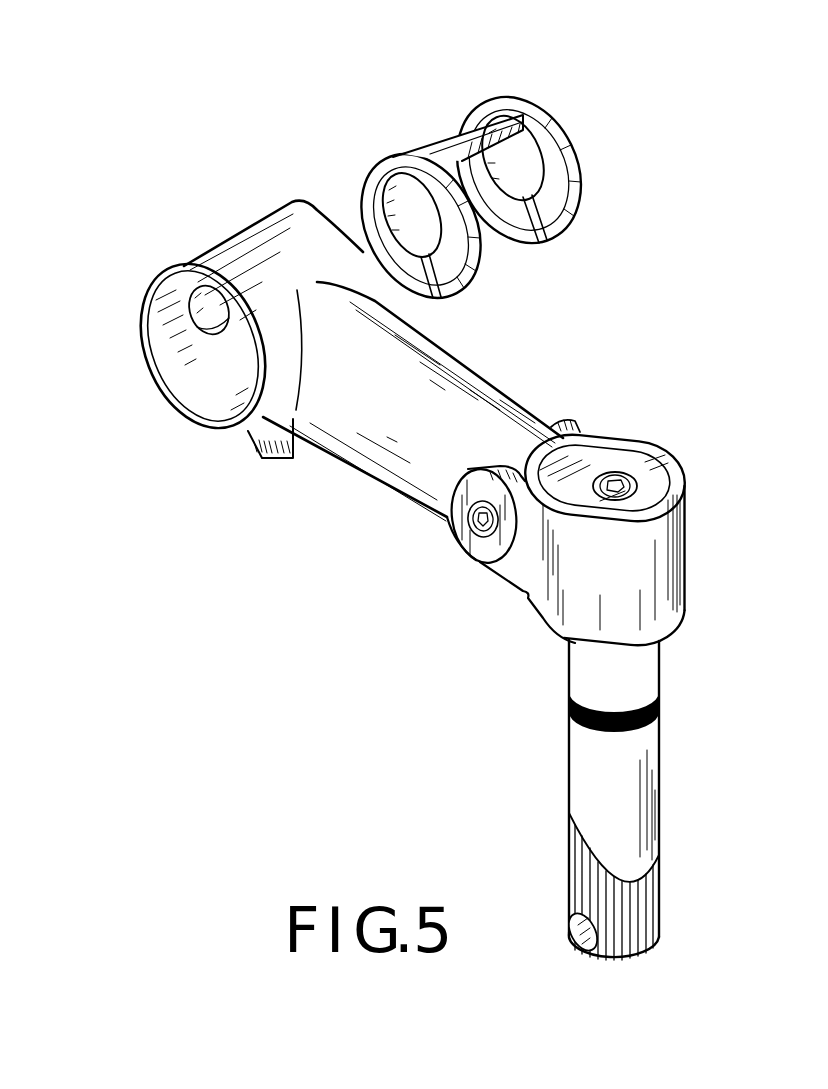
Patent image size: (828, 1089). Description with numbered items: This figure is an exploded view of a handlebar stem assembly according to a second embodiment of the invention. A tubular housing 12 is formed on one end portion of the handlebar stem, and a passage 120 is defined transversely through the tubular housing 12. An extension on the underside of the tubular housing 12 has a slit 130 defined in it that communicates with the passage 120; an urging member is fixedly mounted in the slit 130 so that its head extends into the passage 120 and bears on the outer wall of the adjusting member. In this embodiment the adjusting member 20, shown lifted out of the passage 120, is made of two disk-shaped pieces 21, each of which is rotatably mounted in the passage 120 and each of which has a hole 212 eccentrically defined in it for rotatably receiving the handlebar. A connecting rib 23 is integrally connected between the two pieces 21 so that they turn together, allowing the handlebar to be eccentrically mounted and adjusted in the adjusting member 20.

The tubular housing 12 is at (150, 313).
The passage 120 is at (207, 390).
The slit 130 is at (292, 460).
The adjusting member 20 is at (430, 142).
The disk-shaped piece 21 is at (563, 200).
The hole 212 is at (528, 153).
The connecting rib 23 is at (481, 125).